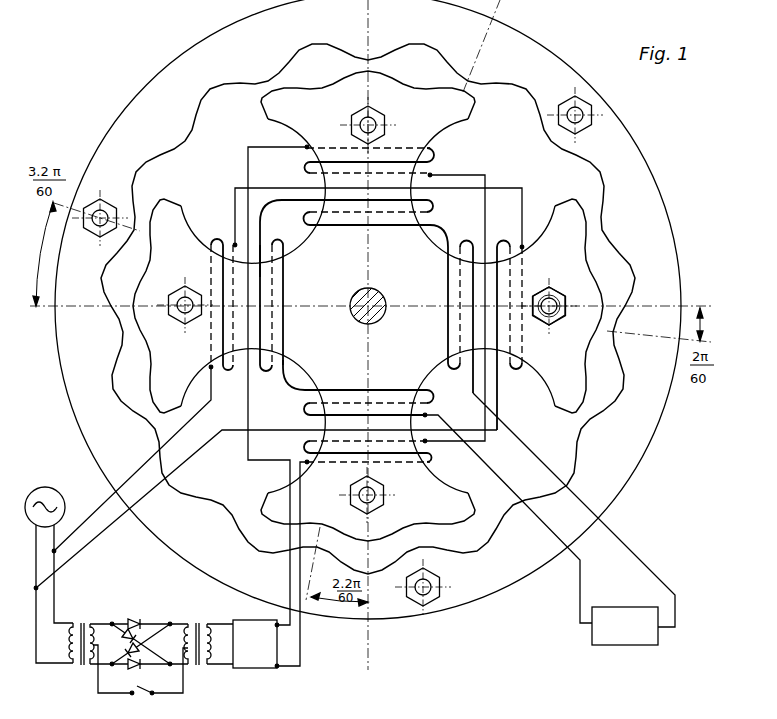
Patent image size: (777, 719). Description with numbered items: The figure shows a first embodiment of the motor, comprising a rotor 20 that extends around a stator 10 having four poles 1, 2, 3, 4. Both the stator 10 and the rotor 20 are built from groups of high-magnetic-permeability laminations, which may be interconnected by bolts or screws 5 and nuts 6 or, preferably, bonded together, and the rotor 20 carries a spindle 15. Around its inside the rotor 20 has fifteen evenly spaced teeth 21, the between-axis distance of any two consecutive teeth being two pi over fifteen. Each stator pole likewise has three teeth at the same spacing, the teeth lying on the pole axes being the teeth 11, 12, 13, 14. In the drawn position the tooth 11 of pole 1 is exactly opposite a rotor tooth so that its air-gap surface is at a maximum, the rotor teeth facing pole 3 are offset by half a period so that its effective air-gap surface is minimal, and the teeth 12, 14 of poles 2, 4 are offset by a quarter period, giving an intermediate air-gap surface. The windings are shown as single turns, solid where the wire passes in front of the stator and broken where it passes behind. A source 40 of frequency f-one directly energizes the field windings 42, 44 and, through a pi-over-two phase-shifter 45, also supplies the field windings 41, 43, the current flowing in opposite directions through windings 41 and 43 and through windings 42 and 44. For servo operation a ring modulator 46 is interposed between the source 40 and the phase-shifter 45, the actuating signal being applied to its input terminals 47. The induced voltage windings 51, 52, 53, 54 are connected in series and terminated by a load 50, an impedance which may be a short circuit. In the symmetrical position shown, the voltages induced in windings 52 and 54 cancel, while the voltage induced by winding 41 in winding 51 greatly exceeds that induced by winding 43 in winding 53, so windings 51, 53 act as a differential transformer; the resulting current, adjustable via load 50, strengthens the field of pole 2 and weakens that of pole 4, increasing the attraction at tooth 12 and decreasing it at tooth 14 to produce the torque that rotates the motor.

The stator pole 1 is at (396, 100).
The stator pole 2 is at (567, 256).
The stator pole 3 is at (390, 540).
The stator pole 4 is at (160, 340).
The bolts or screws 5 is at (552, 316).
The nuts 6 is at (534, 300).
The stator 10 is at (430, 369).
The stator tooth 11 is at (367, 60).
The stator tooth 12 is at (587, 302).
The stator tooth 13 is at (360, 546).
The stator tooth 14 is at (130, 303).
The spindle 15 is at (380, 310).
The rotor 20 is at (183, 77).
The rotor teeth 21 is at (178, 140).
The source 40 is at (49, 564).
The field winding 41 is at (405, 165).
The field winding 42 is at (522, 334).
The field winding 43 is at (395, 468).
The field winding 44 is at (223, 318).
The phase-shifter 45 is at (262, 664).
The ring modulator 46 is at (118, 640).
The input terminals 47 is at (150, 696).
The load 50 is at (627, 612).
The induced voltage winding 51 is at (356, 216).
The induced voltage winding 52 is at (447, 300).
The induced voltage winding 53 is at (372, 396).
The induced voltage winding 54 is at (285, 323).